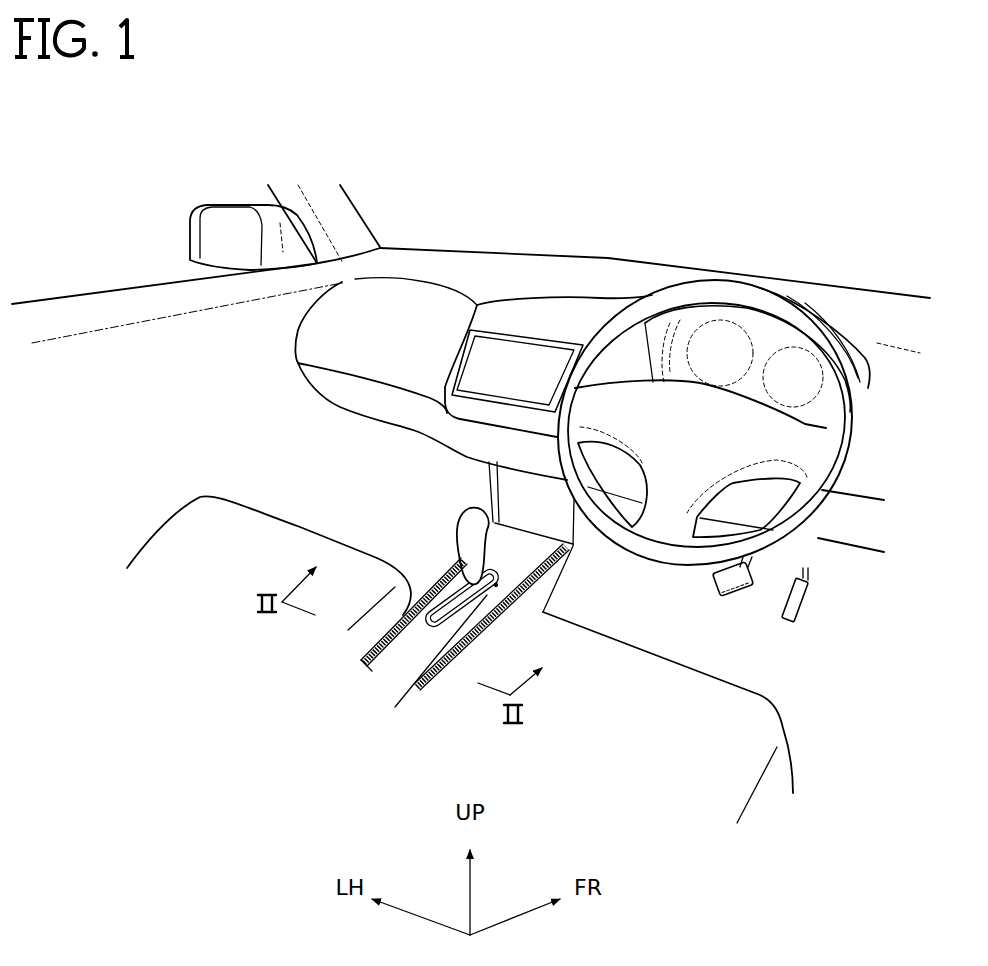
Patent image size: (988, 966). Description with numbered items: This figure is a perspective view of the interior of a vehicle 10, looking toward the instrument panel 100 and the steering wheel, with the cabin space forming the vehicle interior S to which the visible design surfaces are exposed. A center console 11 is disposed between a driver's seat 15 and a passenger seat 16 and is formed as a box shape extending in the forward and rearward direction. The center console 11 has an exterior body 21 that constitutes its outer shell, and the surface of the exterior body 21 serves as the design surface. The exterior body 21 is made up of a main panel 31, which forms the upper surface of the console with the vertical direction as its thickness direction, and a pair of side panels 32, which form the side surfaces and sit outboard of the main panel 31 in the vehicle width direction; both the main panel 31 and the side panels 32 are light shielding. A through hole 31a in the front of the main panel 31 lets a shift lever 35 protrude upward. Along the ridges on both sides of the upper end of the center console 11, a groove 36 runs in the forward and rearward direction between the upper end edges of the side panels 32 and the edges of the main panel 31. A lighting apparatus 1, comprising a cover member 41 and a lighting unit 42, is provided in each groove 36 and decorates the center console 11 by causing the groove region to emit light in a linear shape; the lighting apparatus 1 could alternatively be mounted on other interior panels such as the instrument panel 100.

The vehicle 10 is at (767, 181).
The instrument panel 100 is at (567, 320).
The passenger seat 16 is at (202, 517).
The exterior body 21 is at (443, 563).
The groove 36 is at (424, 624).
The shift lever 35 is at (473, 520).
The side panel 32 is at (369, 650).
The lighting apparatus 1 is at (377, 668).
The cover member 41 is at (358, 659).
The lighting unit 42 is at (391, 632).
The main panel 31 is at (402, 668).
The through hole 31a is at (495, 586).
The center console 11 is at (588, 593).
The driver's seat 15 is at (750, 728).
The vehicle interior S is at (343, 453).